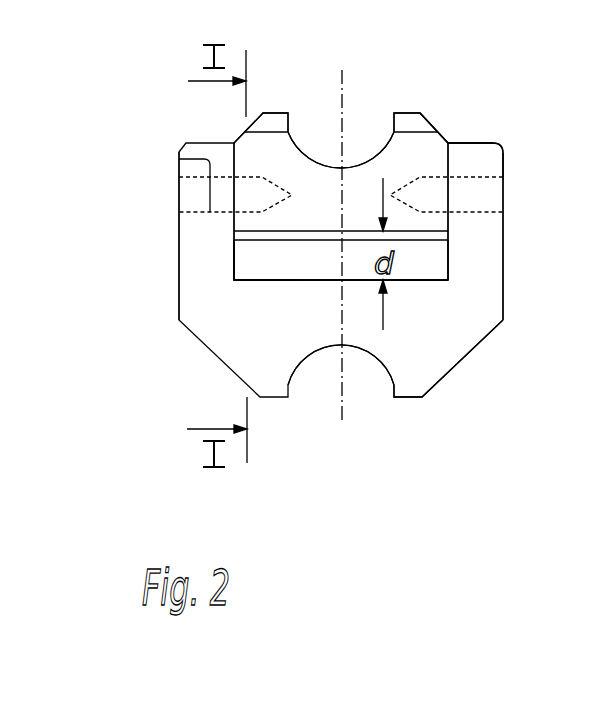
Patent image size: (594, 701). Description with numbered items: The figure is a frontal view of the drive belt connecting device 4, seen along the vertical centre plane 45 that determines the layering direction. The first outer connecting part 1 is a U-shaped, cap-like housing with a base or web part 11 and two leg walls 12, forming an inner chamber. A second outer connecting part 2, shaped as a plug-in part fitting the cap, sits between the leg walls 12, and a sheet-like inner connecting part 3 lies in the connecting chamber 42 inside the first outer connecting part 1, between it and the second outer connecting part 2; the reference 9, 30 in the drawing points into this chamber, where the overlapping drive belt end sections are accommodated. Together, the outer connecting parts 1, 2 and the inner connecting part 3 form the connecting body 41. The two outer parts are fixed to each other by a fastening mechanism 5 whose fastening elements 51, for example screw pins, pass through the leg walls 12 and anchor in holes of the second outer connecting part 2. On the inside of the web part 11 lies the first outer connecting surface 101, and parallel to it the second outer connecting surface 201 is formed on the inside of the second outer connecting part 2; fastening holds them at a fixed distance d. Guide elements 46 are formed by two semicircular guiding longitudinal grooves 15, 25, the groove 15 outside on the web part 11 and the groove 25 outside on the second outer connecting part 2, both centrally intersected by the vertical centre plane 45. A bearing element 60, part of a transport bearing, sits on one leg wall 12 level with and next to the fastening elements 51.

The first outer connecting part 1 is at (474, 352).
The second outer connecting part 2 is at (413, 113).
The inner connecting part 3 is at (440, 262).
The drive belt connecting device 4 is at (463, 100).
The fastening mechanism 5 is at (348, 217).
The fastening elements 51 is at (506, 192).
The guide groove 9 is at (201, 343).
The guide groove 30 is at (283, 267).
The web part 11 is at (368, 327).
The leg walls 12 is at (492, 262).
The guiding longitudinal groove 15 is at (316, 388).
The guiding longitudinal groove 25 is at (316, 130).
The connecting body 41 is at (504, 173).
The connecting chamber 42 is at (327, 237).
The vertical centre plane 45 is at (346, 403).
The guide elements 46 is at (329, 262).
The bearing element 60 is at (178, 143).
The first outer connecting surface 101 is at (428, 283).
The second outer connecting surface 201 is at (446, 244).